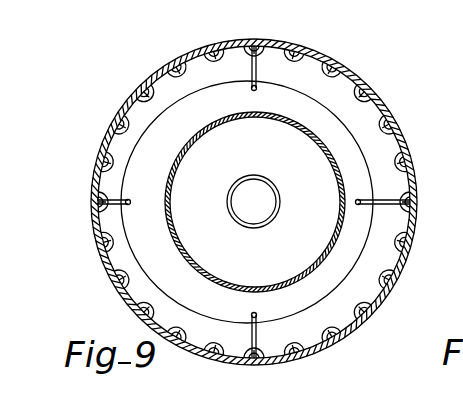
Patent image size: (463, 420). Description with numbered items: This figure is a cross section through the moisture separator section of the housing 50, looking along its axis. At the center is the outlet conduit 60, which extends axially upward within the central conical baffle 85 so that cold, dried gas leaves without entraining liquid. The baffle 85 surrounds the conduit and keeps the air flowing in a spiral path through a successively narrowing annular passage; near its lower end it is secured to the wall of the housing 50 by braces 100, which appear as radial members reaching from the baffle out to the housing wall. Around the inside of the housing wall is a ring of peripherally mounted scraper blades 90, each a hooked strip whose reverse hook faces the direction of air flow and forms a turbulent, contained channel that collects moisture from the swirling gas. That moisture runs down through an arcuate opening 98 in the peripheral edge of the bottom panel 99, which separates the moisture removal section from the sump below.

The housing 50 is at (408, 114).
The bottom panel 99 is at (346, 86).
The scraper blades 90 is at (396, 272).
The braces 100 is at (112, 125).
The arcuate opening 98 is at (357, 305).
The central conical baffle 85 is at (182, 152).
The outlet conduit 60 is at (250, 167).